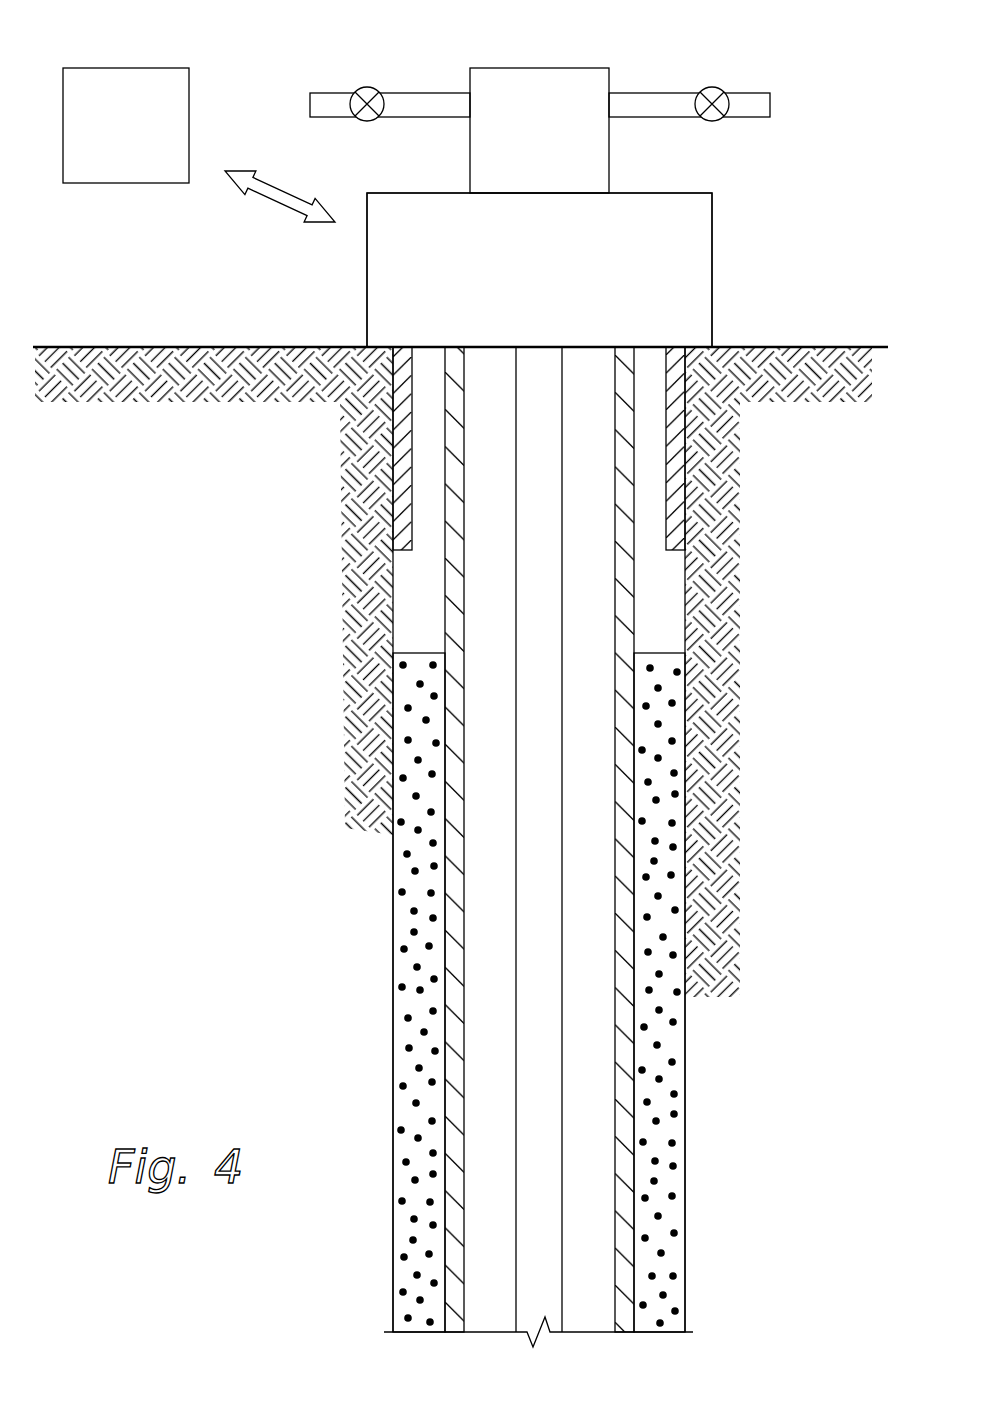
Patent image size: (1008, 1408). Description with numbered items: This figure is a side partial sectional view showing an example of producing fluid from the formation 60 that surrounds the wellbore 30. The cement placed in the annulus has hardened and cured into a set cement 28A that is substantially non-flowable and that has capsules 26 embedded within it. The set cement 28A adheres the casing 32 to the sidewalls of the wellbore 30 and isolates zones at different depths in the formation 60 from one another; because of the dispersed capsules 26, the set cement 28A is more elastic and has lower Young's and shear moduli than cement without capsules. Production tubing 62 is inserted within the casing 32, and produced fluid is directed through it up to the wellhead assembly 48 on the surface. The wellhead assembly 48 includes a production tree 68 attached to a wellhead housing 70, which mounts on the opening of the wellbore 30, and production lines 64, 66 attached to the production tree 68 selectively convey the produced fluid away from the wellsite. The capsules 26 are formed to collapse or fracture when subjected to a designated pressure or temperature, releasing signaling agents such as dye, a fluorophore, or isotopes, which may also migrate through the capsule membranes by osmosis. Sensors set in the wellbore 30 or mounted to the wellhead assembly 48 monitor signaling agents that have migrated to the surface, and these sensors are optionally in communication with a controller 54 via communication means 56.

The capsules 26 is at (659, 1216).
The set cement 28A is at (653, 1057).
The wellbore 30 is at (668, 1132).
The casing 32 is at (623, 603).
The wellhead assembly 48 is at (768, 166).
The controller 54 is at (112, 137).
The communication means 56 is at (277, 203).
The formation 60 is at (725, 812).
The production tubing 62 is at (557, 1108).
The production line 64 is at (422, 91).
The production line 66 is at (662, 91).
The production tree 68 is at (535, 69).
The wellhead housing 70 is at (712, 255).